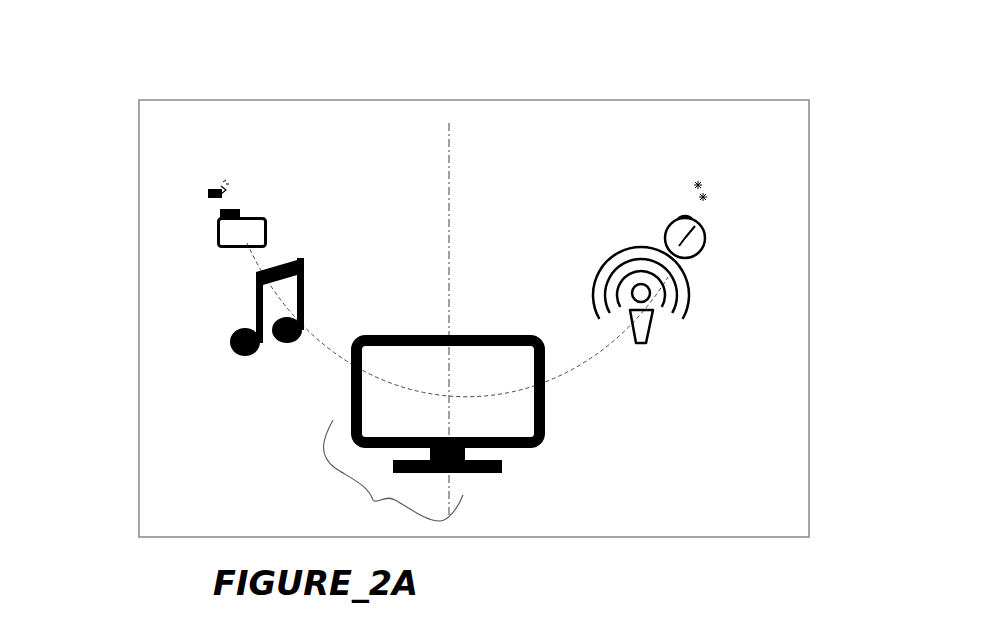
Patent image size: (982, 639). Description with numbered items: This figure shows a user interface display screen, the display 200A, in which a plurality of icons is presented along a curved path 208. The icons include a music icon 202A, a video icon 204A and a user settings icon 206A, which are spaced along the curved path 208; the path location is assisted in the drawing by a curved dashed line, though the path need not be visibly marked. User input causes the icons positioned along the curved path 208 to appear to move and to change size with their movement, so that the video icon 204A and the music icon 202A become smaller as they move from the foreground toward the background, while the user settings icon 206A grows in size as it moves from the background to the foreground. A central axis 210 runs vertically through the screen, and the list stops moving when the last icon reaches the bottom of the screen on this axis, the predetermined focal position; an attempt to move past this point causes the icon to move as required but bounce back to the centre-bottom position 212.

The display 200A is at (241, 85).
The music icon 202A is at (226, 304).
The video icon 204A is at (543, 470).
The user settings icon 206A is at (722, 286).
The curved path 208 is at (580, 372).
The central axis 210 is at (455, 135).
The centre-bottom position 212 is at (373, 503).